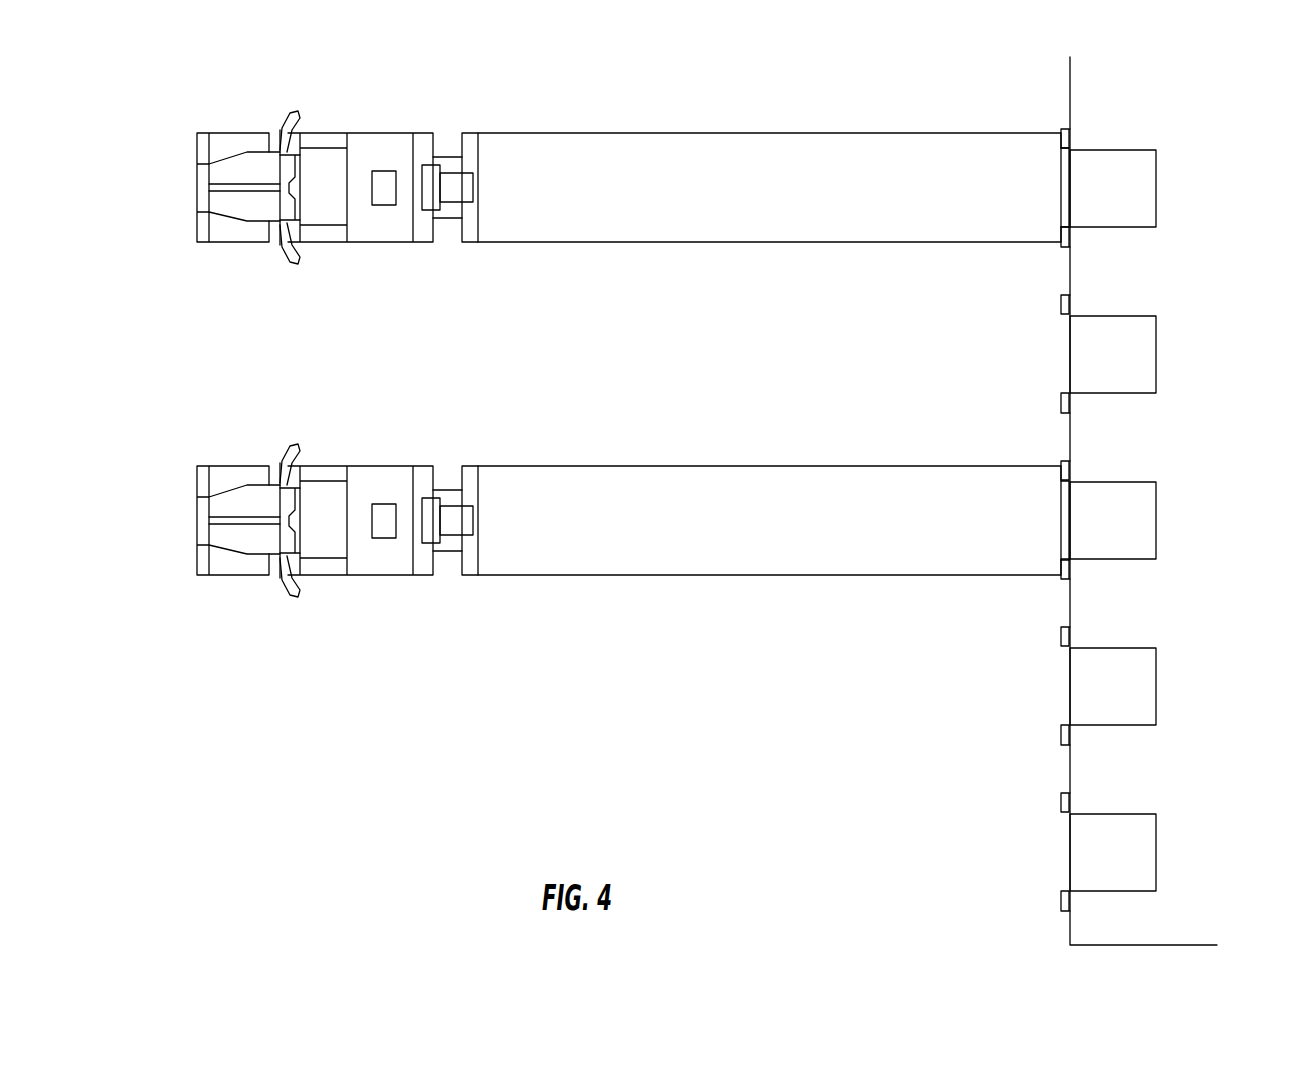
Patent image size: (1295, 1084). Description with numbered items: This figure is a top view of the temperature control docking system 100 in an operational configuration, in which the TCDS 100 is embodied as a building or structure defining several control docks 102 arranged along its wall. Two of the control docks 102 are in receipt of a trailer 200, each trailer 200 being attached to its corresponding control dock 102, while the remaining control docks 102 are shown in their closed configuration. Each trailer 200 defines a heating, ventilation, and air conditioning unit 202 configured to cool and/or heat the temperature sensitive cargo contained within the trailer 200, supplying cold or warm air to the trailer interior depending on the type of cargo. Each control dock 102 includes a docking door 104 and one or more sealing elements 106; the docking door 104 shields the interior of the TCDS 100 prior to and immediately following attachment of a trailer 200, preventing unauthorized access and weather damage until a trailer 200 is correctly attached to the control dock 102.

The temperature control docking system 100 is at (1219, 128).
The control dock 102 is at (1145, 197).
The docking door 104 is at (1048, 189).
The sealing element 106 is at (1061, 139).
The trailer 200 is at (689, 123).
The heating, ventilation, and air conditioning unit 202 is at (457, 178).